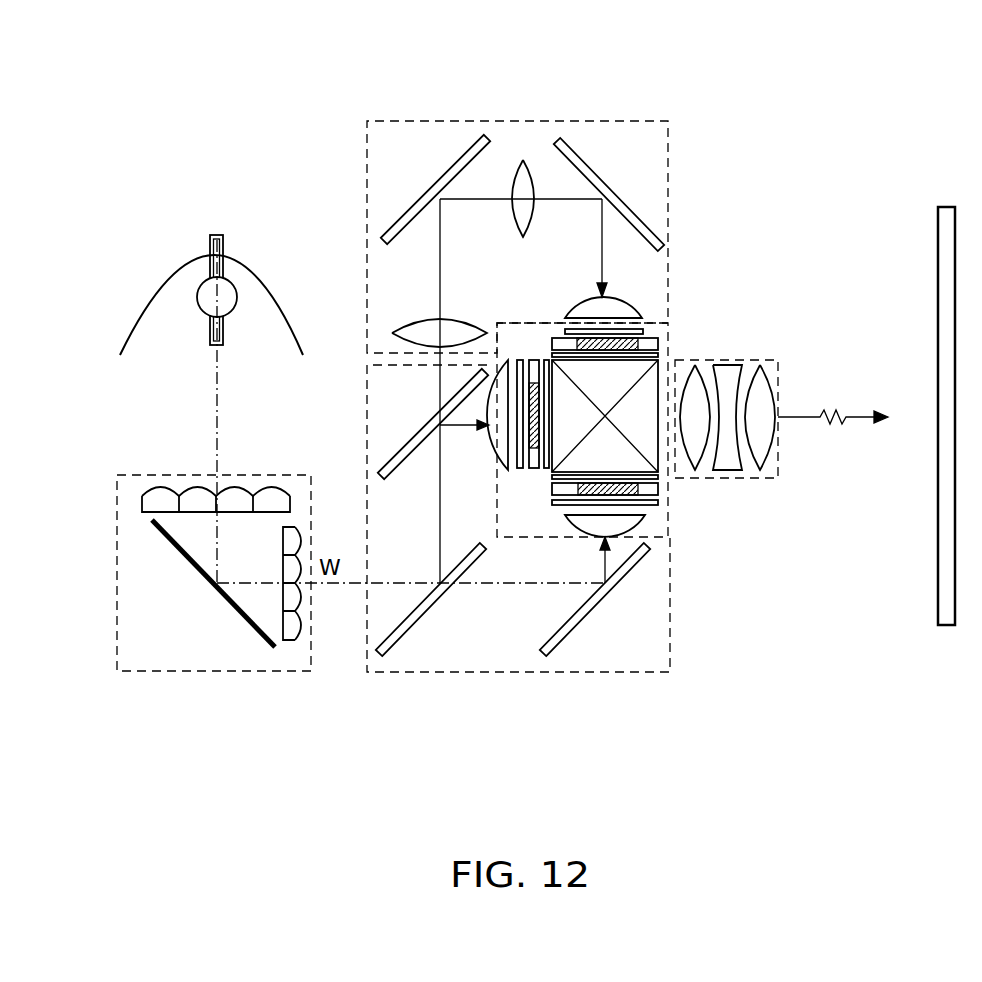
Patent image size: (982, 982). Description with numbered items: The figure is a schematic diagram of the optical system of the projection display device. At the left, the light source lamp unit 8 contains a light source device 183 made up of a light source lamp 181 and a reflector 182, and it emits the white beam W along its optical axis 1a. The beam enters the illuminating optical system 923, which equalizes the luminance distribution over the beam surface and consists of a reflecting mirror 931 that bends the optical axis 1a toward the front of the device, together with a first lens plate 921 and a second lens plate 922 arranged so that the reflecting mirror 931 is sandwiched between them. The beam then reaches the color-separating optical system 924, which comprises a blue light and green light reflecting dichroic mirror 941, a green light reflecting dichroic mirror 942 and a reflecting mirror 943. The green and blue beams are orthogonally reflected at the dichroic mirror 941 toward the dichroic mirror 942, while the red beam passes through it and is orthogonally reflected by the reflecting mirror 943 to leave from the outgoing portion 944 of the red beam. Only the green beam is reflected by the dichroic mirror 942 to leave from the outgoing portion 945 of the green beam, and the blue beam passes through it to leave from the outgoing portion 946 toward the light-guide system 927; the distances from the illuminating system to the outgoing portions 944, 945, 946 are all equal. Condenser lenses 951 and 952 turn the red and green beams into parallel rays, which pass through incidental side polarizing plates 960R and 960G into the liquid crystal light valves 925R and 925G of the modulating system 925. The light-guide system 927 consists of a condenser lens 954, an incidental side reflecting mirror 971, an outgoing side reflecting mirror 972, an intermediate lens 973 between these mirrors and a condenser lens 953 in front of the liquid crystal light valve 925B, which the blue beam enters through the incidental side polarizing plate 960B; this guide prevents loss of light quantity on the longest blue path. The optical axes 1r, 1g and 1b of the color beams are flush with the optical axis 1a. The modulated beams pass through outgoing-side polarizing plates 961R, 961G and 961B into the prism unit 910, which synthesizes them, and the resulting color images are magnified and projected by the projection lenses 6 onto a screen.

The light source lamp unit 8 is at (148, 292).
The light source lamp 181 is at (203, 285).
The reflector 182 is at (240, 268).
The light source device 183 is at (273, 195).
The optical axis 1a is at (217, 408).
The illuminating optical system 923 is at (117, 630).
The first lens plate 921 is at (143, 503).
The second lens plate 922 is at (291, 641).
The reflecting mirror 931 is at (177, 546).
The light-guide system 927 is at (380, 117).
The optical axis of blue beam 1b is at (493, 199).
The incidental side reflecting mirror 971 is at (401, 219).
The outgoing side reflecting mirror 972 is at (621, 197).
The intermediate lens 973 is at (524, 162).
The condenser lens 954 is at (404, 319).
The outgoing portion of blue beam 946 is at (418, 350).
The color-separating optical system 924 is at (672, 652).
The blue light and green light reflecting dichroic mirror 941 is at (395, 648).
The green light reflecting dichroic mirror 942 is at (386, 462).
The reflecting mirror 943 is at (578, 630).
The outgoing portion of red beam 944 is at (630, 560).
The outgoing portion of green beam 945 is at (492, 463).
The optical axis of green beam 1g is at (457, 442).
The optical axis of red beam 1r is at (523, 583).
The modulating system 925 is at (545, 512).
The condenser lens 952 is at (508, 360).
The condenser lens 953 is at (640, 303).
The condenser lens 951 is at (665, 538).
The incidental side polarizing plate 960G is at (515, 470).
The incidental side polarizing plate 960B is at (645, 331).
The incidental side polarizing plate 960R is at (662, 517).
The liquid crystal light valve 925G is at (533, 360).
The liquid crystal light valve 925B is at (663, 345).
The liquid crystal light valve 925R is at (660, 505).
The outgoing-side polarizing plate 961G is at (540, 470).
The outgoing-side polarizing plate 961B is at (663, 357).
The outgoing-side polarizing plate 961R is at (660, 492).
The prism unit 910 is at (633, 427).
The projection lenses 6 is at (804, 396).